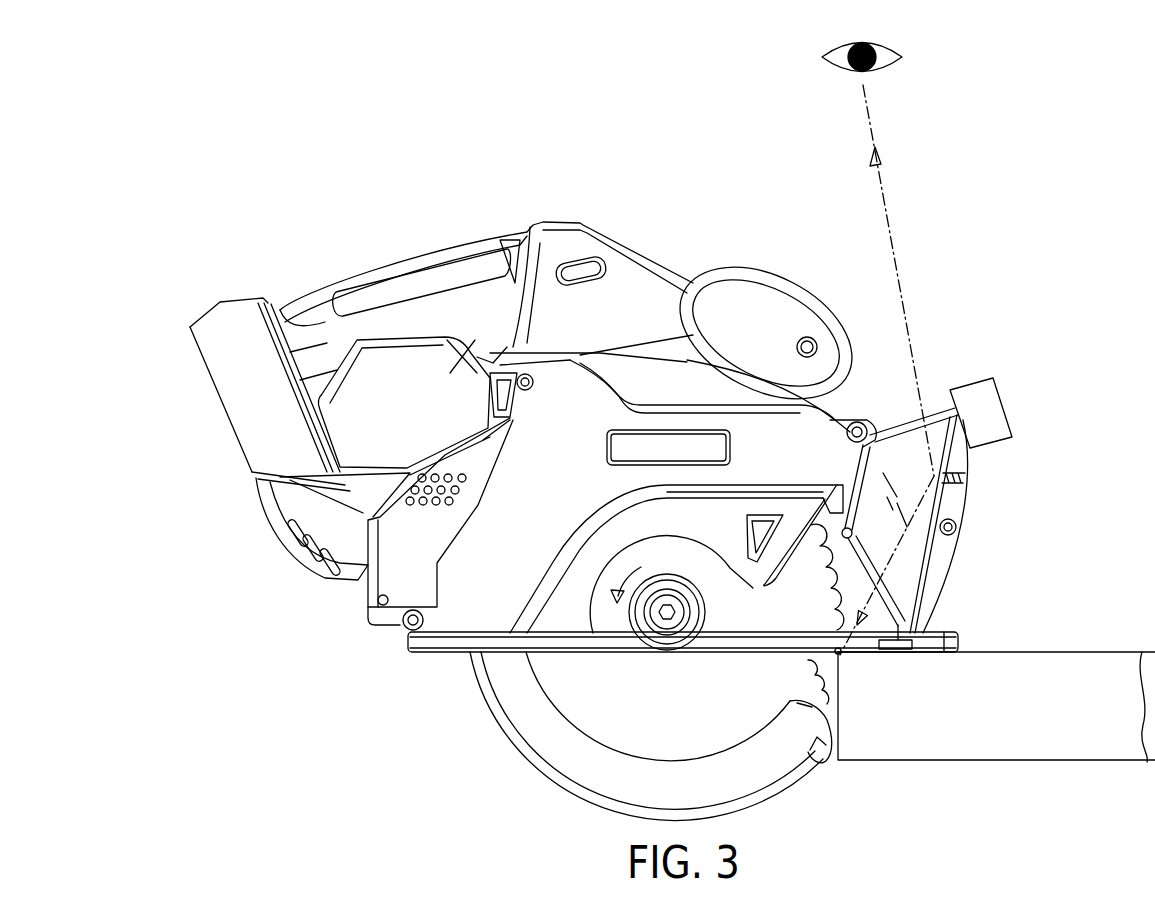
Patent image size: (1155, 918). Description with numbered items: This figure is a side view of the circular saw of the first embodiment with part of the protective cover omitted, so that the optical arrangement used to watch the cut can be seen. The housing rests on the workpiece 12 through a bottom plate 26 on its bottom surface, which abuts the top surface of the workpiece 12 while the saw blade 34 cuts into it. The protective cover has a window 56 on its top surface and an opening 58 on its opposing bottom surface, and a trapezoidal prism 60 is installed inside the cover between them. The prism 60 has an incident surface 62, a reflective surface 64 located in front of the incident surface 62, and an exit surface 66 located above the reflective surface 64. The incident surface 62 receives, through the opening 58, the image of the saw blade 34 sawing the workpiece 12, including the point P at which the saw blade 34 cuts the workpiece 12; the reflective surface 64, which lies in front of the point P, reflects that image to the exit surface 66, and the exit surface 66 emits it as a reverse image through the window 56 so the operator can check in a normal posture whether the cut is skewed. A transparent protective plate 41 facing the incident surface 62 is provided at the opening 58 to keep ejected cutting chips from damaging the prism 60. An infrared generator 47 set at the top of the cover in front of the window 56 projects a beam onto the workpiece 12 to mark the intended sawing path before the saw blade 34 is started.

The workpiece 12 is at (1108, 652).
The bottom plate 26 is at (446, 654).
The saw blade 34 is at (613, 723).
The transparent protective plate 41 is at (840, 654).
The infrared generator 47 is at (990, 412).
The window 56 is at (905, 485).
The opening 58 is at (898, 625).
The prism 60 is at (943, 480).
The incident surface 62 is at (843, 633).
The reflective surface 64 is at (945, 550).
The exit surface 66 is at (935, 420).
The point P is at (815, 655).